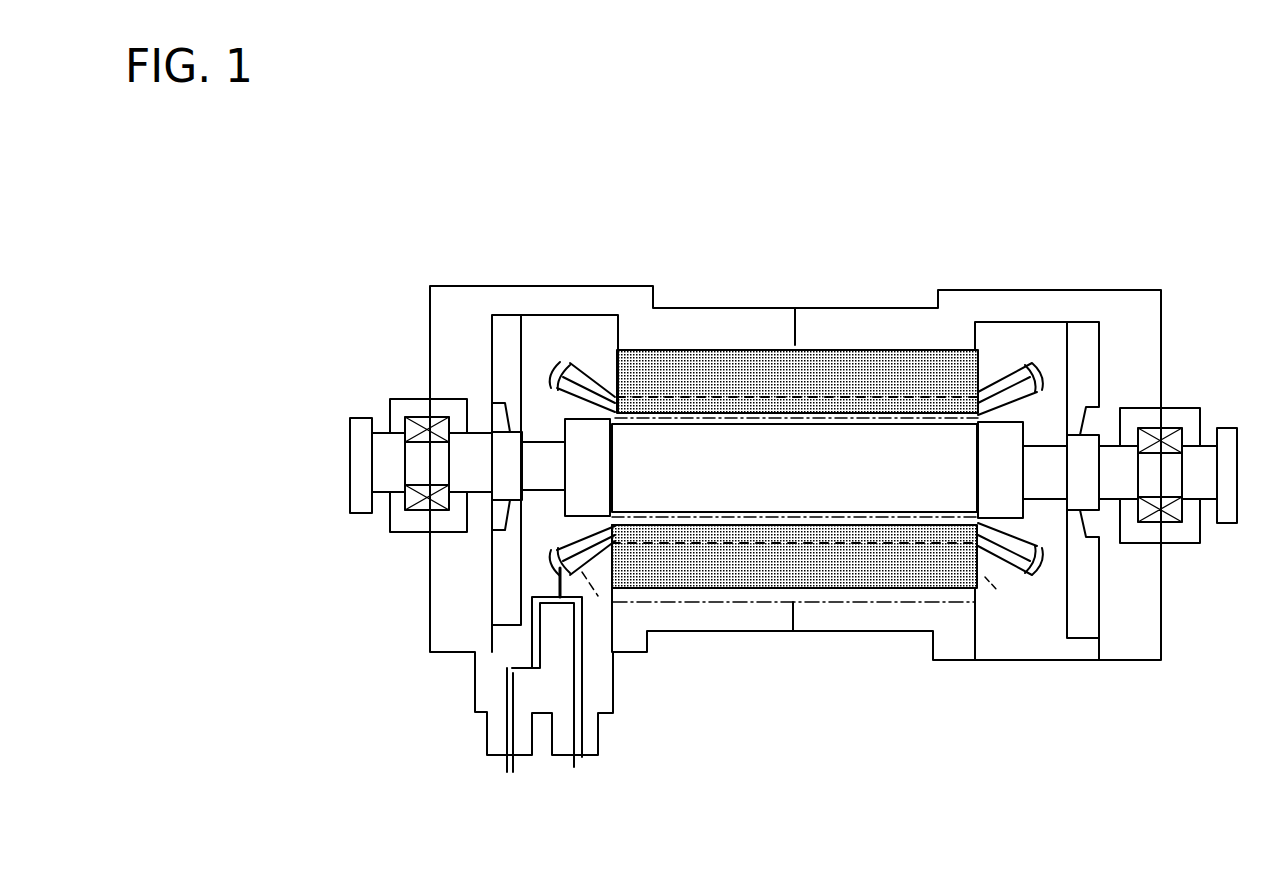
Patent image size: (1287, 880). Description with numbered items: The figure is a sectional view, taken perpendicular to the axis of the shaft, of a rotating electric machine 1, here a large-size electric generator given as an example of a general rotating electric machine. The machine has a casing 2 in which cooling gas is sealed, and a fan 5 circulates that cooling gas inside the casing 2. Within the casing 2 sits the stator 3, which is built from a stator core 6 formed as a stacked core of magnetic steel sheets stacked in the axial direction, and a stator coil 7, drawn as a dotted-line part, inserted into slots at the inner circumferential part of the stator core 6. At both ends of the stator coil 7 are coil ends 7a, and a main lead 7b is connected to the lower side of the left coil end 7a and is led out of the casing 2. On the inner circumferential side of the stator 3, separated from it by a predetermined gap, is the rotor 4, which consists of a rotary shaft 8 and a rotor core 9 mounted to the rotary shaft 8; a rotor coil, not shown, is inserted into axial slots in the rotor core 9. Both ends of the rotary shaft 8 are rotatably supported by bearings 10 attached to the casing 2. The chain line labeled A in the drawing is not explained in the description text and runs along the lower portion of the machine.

The rotating electric machine 1 is at (372, 262).
The casing 2 is at (455, 286).
The stator 3 is at (817, 350).
The rotor 4 is at (728, 427).
The fan 5 is at (490, 530).
The stator core 6 is at (870, 368).
The stator coil 7 is at (943, 352).
The coil end 7a is at (1030, 362).
The main lead 7b is at (503, 683).
The rotary shaft 8 is at (548, 437).
The rotor core 9 is at (668, 448).
The bearing 10 is at (422, 418).
The axis line A is at (855, 600).